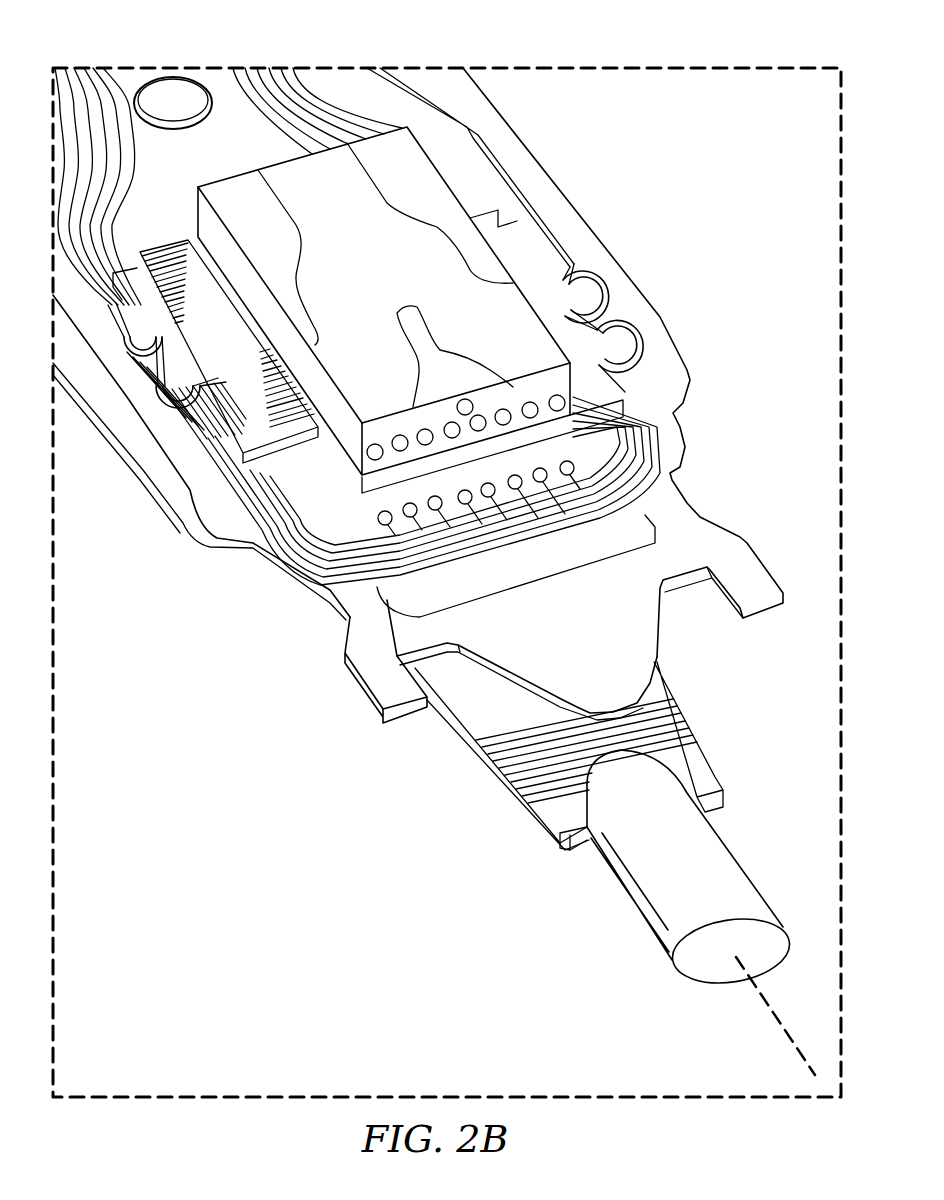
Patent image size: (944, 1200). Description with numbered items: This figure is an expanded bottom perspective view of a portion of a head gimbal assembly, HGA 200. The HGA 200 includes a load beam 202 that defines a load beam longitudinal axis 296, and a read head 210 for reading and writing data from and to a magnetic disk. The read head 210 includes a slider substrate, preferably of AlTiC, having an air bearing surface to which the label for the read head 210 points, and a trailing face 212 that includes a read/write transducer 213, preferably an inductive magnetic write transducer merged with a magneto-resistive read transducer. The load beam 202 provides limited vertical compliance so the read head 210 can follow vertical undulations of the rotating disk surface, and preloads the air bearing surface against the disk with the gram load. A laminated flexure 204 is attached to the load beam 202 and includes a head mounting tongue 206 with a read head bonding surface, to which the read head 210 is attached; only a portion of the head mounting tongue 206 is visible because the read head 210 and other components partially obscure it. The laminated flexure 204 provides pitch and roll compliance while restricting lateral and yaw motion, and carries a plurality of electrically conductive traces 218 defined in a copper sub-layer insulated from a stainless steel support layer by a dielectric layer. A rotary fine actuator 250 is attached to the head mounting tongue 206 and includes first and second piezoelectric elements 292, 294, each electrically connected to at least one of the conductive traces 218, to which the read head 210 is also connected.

The HGA 200 is at (314, 936).
The load beam 202 is at (693, 759).
The laminated flexure 204 is at (120, 83).
The head mounting tongue 206 is at (468, 475).
The read head 210 is at (428, 198).
The trailing face 212 is at (570, 390).
The read/write transducer 213 is at (466, 405).
The electrically conductive traces 218 is at (325, 97).
The rotary fine actuator 250 is at (240, 427).
The first piezoelectric element 292 is at (212, 297).
The second piezoelectric element 294 is at (518, 262).
The load beam longitudinal axis 296 is at (767, 1003).